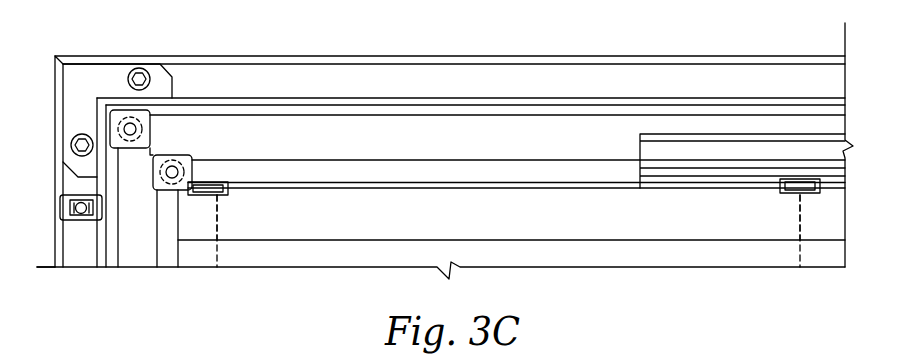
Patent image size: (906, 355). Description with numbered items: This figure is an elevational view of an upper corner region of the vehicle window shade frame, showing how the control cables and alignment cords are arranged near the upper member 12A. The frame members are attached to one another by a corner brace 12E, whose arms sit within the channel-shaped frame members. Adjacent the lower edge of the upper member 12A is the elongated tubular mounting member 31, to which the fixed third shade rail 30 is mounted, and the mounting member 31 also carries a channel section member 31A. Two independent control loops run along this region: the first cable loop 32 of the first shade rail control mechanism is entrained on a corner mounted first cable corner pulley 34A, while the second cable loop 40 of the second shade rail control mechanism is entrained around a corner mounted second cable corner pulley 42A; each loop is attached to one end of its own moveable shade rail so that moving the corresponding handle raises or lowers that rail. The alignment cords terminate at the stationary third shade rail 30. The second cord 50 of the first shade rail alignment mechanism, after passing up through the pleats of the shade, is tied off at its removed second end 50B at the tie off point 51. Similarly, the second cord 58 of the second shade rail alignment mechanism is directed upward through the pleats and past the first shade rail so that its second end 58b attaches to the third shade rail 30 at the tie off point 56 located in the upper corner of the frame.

The upper member 12A is at (643, 56).
The corner brace 12E is at (100, 78).
The second cable loop 40 is at (292, 115).
The second cable corner pulley 42A is at (143, 110).
The first cable corner pulley 34A is at (180, 155).
The mounting member 31 is at (451, 145).
The first cable loop 32 is at (315, 160).
The third shade rail 30 is at (372, 189).
The channel section member 31A is at (690, 185).
The tie off point 56 is at (228, 193).
The tie off point 51 is at (782, 193).
The second end of second cord 58b is at (217, 195).
The second cord 58 is at (217, 248).
The second end of second cord 50B is at (800, 197).
The second cord 50 is at (800, 250).